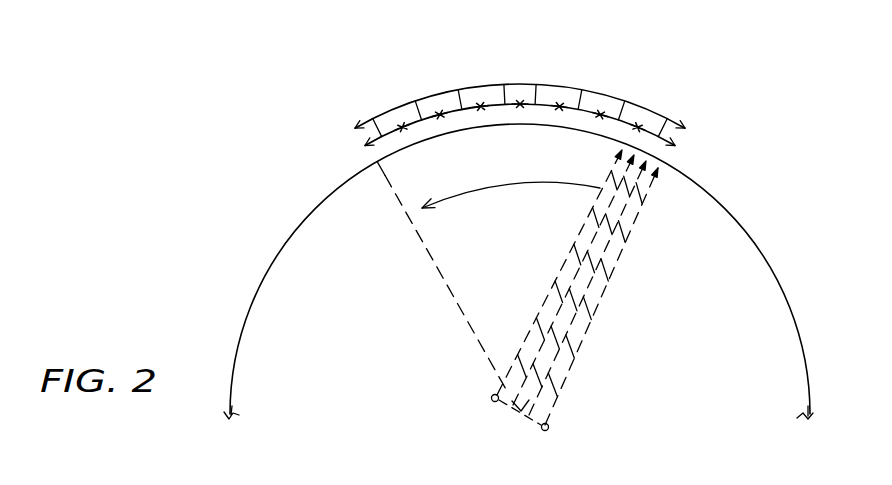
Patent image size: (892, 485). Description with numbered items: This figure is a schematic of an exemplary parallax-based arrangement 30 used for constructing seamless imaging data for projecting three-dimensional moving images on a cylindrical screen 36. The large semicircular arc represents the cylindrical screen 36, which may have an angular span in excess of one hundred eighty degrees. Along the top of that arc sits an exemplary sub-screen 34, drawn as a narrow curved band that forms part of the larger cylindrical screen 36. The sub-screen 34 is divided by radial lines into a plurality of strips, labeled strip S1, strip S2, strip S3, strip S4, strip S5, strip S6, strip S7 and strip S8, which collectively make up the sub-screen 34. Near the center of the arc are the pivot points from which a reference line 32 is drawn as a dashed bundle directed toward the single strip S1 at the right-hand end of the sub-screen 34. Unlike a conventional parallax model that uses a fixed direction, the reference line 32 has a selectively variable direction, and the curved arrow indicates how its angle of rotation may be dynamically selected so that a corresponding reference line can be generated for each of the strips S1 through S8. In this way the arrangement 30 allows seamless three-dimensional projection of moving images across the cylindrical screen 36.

The parallax-based arrangement 30 is at (259, 140).
The reference line 32 is at (541, 428).
The sub-screen 34 is at (517, 84).
The cylindrical screen 36 is at (747, 235).
The strip S1 is at (667, 119).
The strip S2 is at (625, 101).
The strip S3 is at (582, 90).
The strip S4 is at (536, 85).
The strip S5 is at (504, 84).
The strip S6 is at (458, 90).
The strip S7 is at (416, 102).
The strip S8 is at (378, 131).